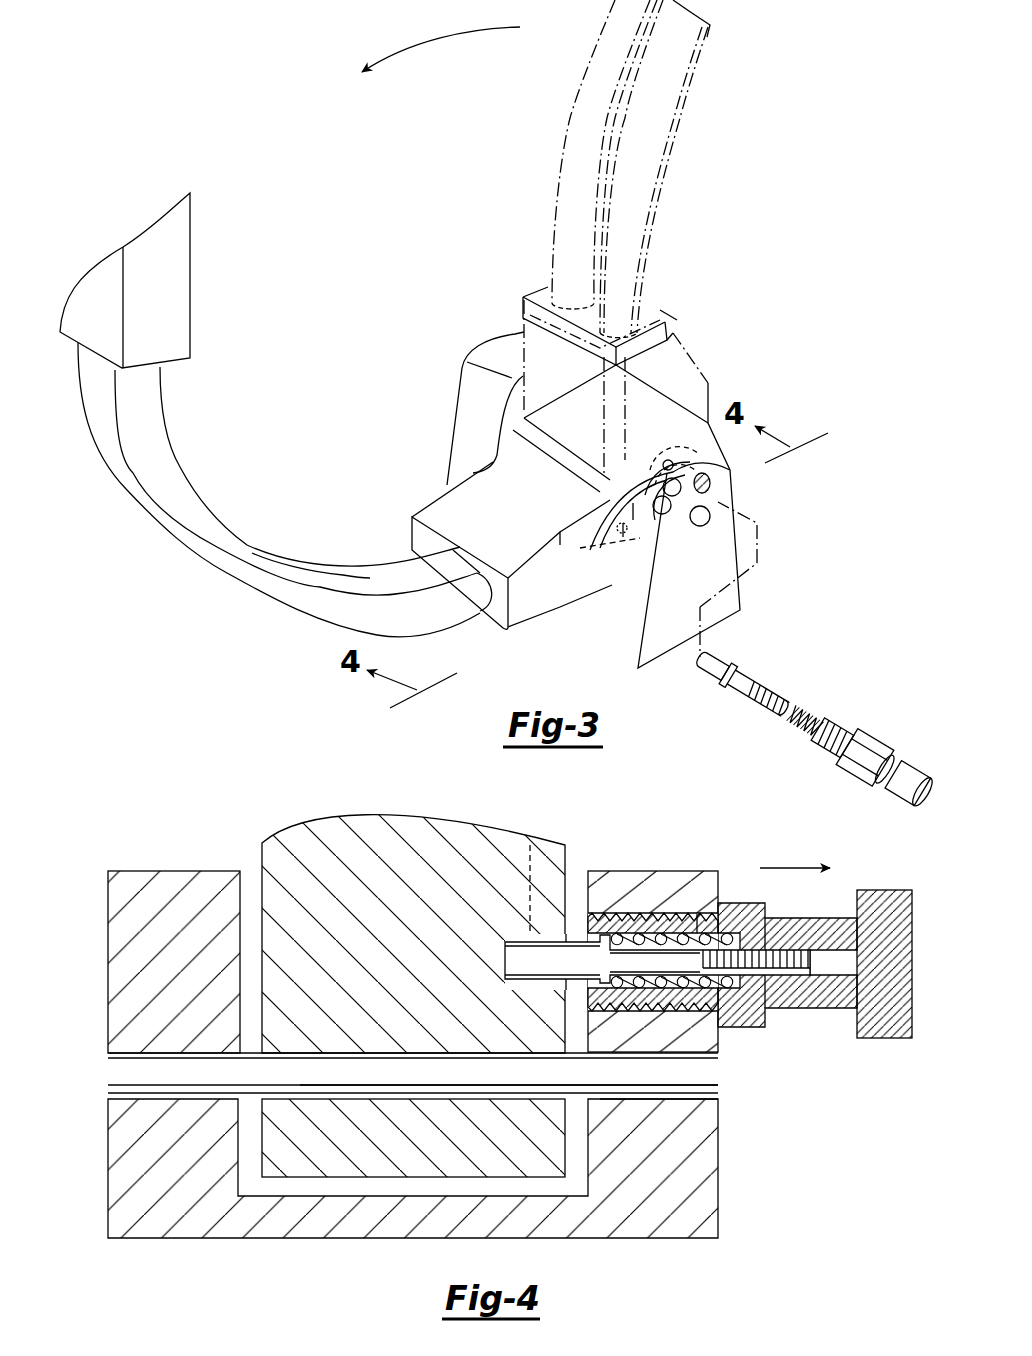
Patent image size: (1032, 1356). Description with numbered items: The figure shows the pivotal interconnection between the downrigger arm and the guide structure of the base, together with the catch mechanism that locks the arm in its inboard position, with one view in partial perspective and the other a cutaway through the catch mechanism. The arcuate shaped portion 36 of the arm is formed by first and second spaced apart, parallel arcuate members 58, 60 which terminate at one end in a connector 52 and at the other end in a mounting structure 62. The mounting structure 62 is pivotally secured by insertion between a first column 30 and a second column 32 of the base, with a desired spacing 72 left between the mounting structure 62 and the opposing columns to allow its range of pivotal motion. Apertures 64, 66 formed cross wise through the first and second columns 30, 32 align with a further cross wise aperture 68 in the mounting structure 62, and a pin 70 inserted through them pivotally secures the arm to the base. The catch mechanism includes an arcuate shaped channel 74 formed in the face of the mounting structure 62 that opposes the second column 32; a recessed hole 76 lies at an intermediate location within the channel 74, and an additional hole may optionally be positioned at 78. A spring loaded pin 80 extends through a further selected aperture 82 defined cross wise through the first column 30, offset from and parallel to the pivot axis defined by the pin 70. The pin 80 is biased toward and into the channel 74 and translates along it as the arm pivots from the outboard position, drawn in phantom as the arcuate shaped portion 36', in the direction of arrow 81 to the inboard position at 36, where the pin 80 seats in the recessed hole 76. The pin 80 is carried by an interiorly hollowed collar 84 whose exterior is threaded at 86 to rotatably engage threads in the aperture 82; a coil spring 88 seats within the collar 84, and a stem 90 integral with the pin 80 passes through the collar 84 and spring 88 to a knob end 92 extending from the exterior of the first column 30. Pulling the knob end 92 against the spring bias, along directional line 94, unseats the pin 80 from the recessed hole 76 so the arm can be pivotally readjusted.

In FIG. 3, the first column 30 is at (625, 648).
In FIG. 4, the first column 30 is at (620, 873).
In FIG. 3, the second column 32 is at (462, 433).
In FIG. 4, the second column 32 is at (172, 870).
In FIG. 3, the arcuate shaped portion 36 is at (279, 504).
In FIG. 3, the arcuate shaped portion in phantom 36' is at (615, 169).
In FIG. 3, the connector 52 is at (185, 300).
In FIG. 4, the connector 52 is at (325, 820).
In FIG. 3, the first arcuate member 58 is at (343, 575).
In FIG. 3, the second arcuate member 60 is at (320, 623).
In FIG. 3, the mounting structure 62 is at (470, 505).
In FIG. 4, the aperture 64 is at (122, 1095).
In FIG. 3, the aperture 66 is at (700, 527).
In FIG. 4, the aperture 66 is at (690, 1087).
In FIG. 3, the aperture 68 is at (650, 530).
In FIG. 4, the aperture 68 is at (415, 1093).
In FIG. 4, the pin 70 is at (120, 1078).
In FIG. 4, the spacing 72 is at (345, 1190).
In FIG. 3, the arcuate shaped channel 74 is at (628, 503).
In FIG. 4, the arcuate shaped channel 74 is at (547, 848).
In FIG. 3, the recessed hole 76 is at (668, 460).
In FIG. 4, the recessed hole 76 is at (575, 945).
In FIG. 3, the additional hole 78 is at (600, 545).
In FIG. 3, the spring loaded pin 80 is at (706, 676).
In FIG. 4, the spring loaded pin 80 is at (512, 958).
In FIG. 3, the arrow 81 is at (430, 36).
In FIG. 3, the further selected aperture 82 is at (712, 482).
In FIG. 4, the further selected aperture 82 is at (697, 913).
In FIG. 3, the collar 84 is at (857, 728).
In FIG. 4, the collar 84 is at (740, 900).
In FIG. 3, the threads 86 is at (823, 748).
In FIG. 4, the threads 86 is at (666, 913).
In FIG. 3, the coil spring 88 is at (808, 709).
In FIG. 4, the coil spring 88 is at (733, 985).
In FIG. 3, the stem 90 is at (757, 680).
In FIG. 4, the stem 90 is at (797, 977).
In FIG. 3, the knob end 92 is at (902, 767).
In FIG. 4, the knob end 92 is at (872, 892).
In FIG. 4, the directional line 94 is at (808, 862).